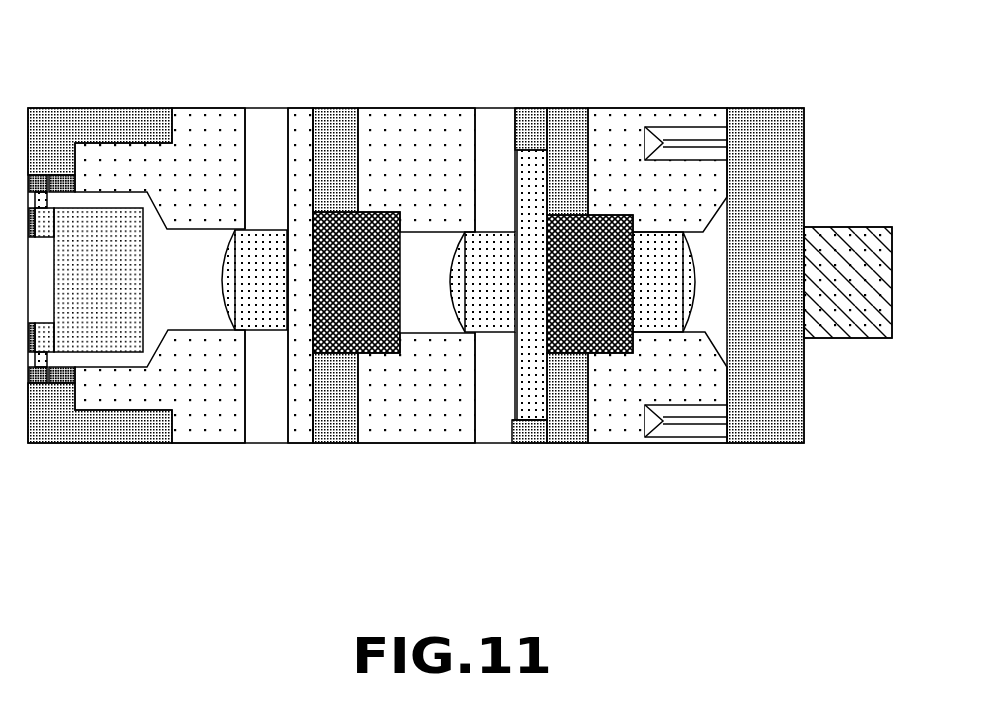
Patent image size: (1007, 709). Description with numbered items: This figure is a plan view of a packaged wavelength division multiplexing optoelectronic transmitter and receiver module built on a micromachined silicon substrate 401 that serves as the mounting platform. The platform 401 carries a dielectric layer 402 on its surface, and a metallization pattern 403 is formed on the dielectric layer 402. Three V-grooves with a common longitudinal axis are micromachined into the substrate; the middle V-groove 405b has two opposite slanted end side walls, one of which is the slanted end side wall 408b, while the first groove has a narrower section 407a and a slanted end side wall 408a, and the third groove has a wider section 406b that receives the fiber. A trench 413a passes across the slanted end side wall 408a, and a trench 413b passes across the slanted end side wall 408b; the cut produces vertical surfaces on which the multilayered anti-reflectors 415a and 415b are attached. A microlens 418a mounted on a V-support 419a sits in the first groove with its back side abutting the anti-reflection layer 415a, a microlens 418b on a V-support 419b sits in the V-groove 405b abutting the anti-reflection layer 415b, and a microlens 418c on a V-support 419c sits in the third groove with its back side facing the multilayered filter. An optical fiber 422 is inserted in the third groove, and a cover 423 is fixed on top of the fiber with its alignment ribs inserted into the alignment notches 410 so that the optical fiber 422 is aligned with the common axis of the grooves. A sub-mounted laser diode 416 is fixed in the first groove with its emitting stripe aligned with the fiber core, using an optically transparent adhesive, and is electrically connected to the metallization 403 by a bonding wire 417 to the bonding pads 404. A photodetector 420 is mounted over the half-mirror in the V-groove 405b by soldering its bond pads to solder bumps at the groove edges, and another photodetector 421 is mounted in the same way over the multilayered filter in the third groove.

The silicon substrate 401 is at (333, 112).
The dielectric layer 402 is at (403, 413).
The metallization pattern 403 is at (330, 420).
The bonding pads 404 is at (60, 390).
The V-groove 405b is at (432, 283).
The wider section of V-groove 406b is at (722, 288).
The narrower section of V-groove 407a is at (170, 268).
The slanted end side wall 408a is at (300, 283).
The slanted end side wall 408b is at (530, 215).
The alignment notches 410 is at (703, 137).
The trench 413a is at (270, 390).
The trench 413b is at (500, 390).
The multilayered anti-reflector 415a is at (300, 290).
The multilayered anti-reflector 415b is at (568, 247).
The sub-mounted laser diode 416 is at (105, 327).
The bonding wire 417 is at (45, 193).
The microlens 418a is at (228, 230).
The microlens 418b is at (453, 232).
The microlens 418c is at (690, 235).
The V-support 419a is at (252, 280).
The V-support 419b is at (490, 277).
The V-support 419c is at (655, 295).
The photodetector 420 is at (382, 262).
The photodetector 421 is at (563, 300).
The optical fiber 422 is at (843, 270).
The cover 423 is at (765, 400).